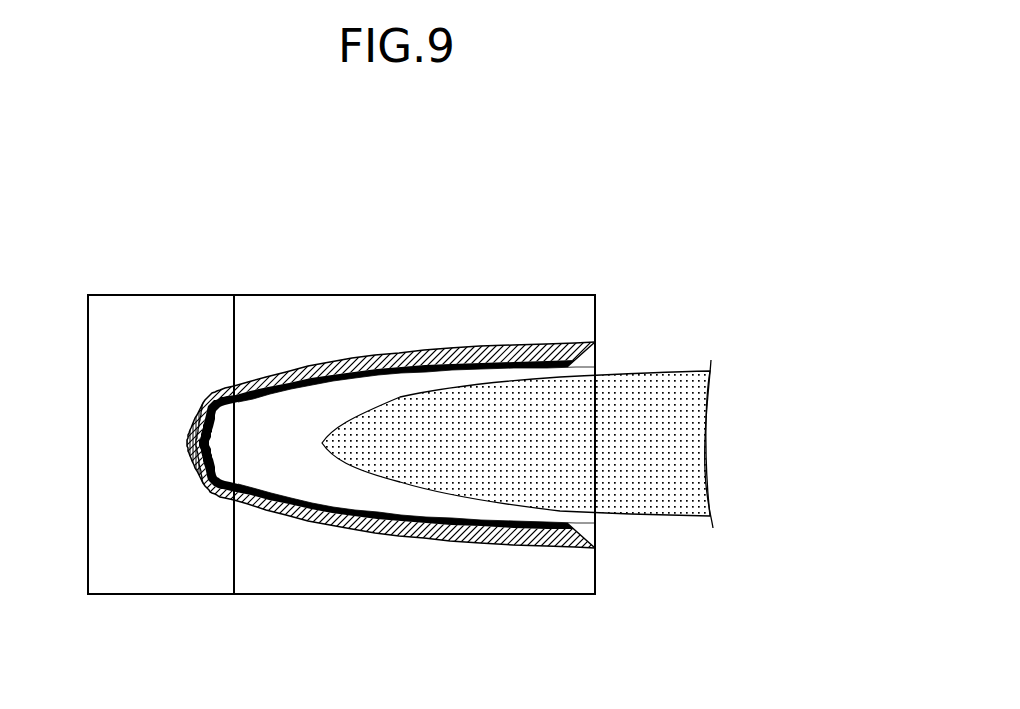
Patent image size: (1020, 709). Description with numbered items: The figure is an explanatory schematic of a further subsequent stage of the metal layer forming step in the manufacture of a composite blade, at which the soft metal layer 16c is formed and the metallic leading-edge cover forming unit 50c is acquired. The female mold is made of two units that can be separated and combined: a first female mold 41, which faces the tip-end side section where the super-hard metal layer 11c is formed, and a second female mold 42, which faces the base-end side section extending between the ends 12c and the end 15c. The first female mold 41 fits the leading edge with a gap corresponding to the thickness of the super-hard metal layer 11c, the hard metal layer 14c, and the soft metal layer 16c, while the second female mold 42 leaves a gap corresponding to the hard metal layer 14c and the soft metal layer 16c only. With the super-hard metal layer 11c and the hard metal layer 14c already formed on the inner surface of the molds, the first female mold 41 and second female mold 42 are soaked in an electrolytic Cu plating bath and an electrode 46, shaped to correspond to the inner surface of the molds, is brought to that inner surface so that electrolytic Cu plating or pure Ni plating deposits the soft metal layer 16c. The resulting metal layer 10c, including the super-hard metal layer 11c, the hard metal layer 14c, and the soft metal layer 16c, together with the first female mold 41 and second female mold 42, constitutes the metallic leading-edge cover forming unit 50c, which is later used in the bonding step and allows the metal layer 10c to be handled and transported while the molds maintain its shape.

The metallic leading-edge cover forming unit 50c is at (632, 190).
The metal layer 10c is at (518, 343).
The hard metal layer 14c is at (380, 536).
The end 15c is at (590, 342).
The soft metal layer 16c is at (290, 489).
The ends 12c is at (238, 386).
The super-hard metal layer 11c is at (190, 443).
The electrode 46 is at (677, 387).
The first female mold 41 is at (177, 301).
The second female mold 42 is at (377, 301).